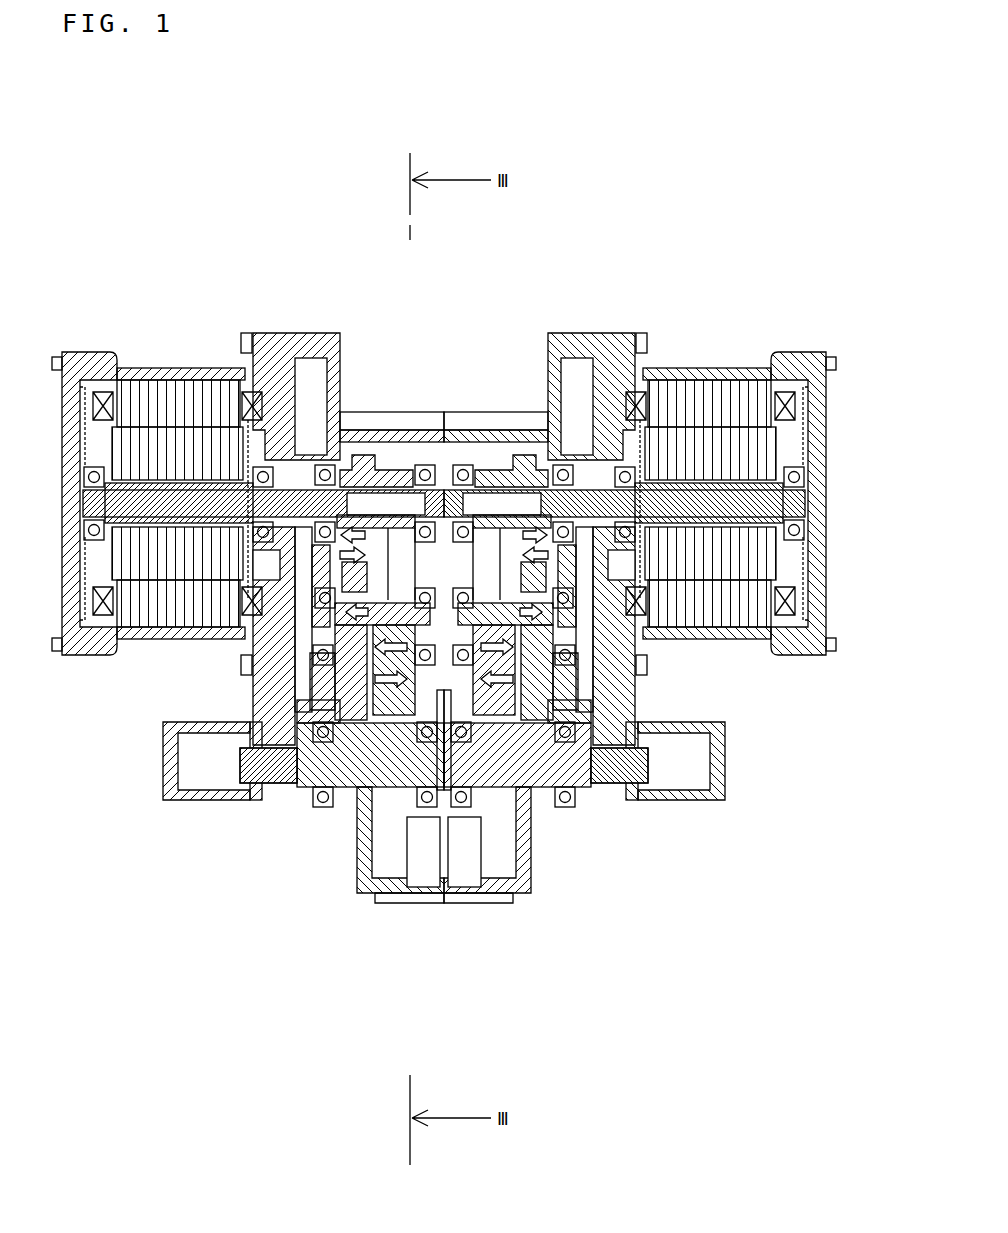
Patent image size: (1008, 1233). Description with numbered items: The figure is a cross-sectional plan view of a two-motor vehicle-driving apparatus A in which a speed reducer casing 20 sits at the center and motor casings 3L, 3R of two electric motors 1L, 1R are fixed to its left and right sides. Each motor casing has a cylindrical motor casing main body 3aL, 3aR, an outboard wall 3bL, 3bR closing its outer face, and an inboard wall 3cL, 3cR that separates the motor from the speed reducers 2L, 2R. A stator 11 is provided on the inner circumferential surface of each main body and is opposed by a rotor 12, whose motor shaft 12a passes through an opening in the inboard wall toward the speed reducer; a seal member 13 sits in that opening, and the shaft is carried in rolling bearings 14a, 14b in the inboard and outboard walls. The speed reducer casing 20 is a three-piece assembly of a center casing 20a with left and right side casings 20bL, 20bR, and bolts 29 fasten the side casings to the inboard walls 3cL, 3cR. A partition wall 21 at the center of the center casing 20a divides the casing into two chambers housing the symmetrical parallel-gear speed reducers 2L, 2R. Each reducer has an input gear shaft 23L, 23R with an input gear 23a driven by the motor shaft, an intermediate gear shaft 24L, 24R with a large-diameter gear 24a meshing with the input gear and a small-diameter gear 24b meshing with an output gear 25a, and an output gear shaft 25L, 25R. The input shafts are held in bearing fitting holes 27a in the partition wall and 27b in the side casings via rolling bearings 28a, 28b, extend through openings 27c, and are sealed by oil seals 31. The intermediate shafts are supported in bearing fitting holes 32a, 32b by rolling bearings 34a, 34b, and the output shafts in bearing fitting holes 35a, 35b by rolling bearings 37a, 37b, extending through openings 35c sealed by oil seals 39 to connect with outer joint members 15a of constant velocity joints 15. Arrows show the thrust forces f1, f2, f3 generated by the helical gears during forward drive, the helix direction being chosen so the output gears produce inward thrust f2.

The two-motor vehicle-driving apparatus A is at (158, 160).
The left electric motor 1L is at (92, 662).
The right electric motor 1R is at (793, 662).
The left speed reducer 2L is at (362, 950).
The right speed reducer 2R is at (523, 950).
The left motor casing 3L is at (165, 224).
The right motor casing 3R is at (785, 240).
The left motor casing main body 3aL is at (120, 368).
The right motor casing main body 3aR is at (765, 368).
The left outboard wall 3bL is at (66, 352).
The right outboard wall 3bR is at (822, 352).
The left inboard wall 3cL is at (240, 420).
The right inboard wall 3cR is at (648, 420).
The stator 11 is at (186, 605).
The rotor 12 is at (140, 505).
The motor shaft 12a is at (172, 565).
The seal member 13 is at (260, 472).
The rolling bearing 14a is at (221, 620).
The rolling bearing 14b is at (72, 632).
The constant velocity joint 15 is at (150, 752).
The outer joint member 15a is at (180, 795).
The speed reducer casing 20 is at (510, 1018).
The center casing 20a is at (444, 905).
The left side casing 20bL is at (390, 902).
The right side casing 20bR is at (502, 902).
The partition wall 21 is at (446, 412).
The left input gear shaft 23L is at (375, 462).
The right input gear shaft 23R is at (512, 462).
The input gear 23a is at (352, 458).
The left intermediate gear shaft 24L is at (300, 770).
The right intermediate gear shaft 24R is at (590, 768).
The large-diameter gear 24a is at (330, 772).
The small-diameter gear 24b is at (305, 652).
The left output gear shaft 25L is at (395, 852).
The right output gear shaft 25R is at (492, 852).
The output gear 25a is at (425, 836).
The bearing fitting hole 27a is at (424, 464).
The bearing fitting hole 27b is at (318, 463).
The opening 27c is at (303, 466).
The rolling bearing 28a is at (348, 470).
The rolling bearing 28b is at (325, 470).
The bolt 29 is at (290, 466).
The oil seal 31 is at (286, 480).
The bearing fitting hole 32a is at (380, 832).
The bearing fitting hole 32b is at (250, 770).
The rolling bearing 34a is at (370, 802).
The rolling bearing 34b is at (240, 752).
The bearing fitting hole 35a is at (405, 882).
The bearing fitting hole 35b is at (345, 762).
The opening 35c is at (330, 782).
The rolling bearing 37a is at (410, 872).
The rolling bearing 37b is at (357, 790).
The oil seal 39 is at (315, 800).
The thrust directional force f1 is at (370, 556).
The thrust directional force f2 is at (441, 662).
The thrust directional force f3 is at (368, 610).